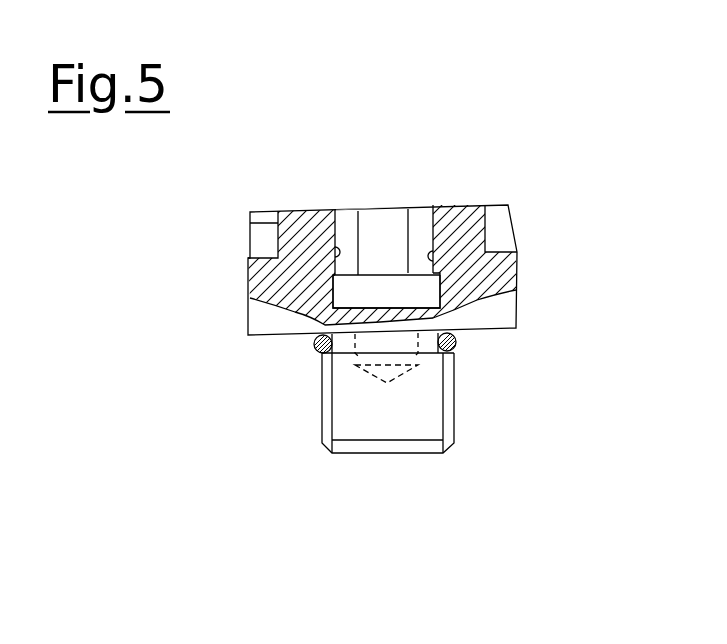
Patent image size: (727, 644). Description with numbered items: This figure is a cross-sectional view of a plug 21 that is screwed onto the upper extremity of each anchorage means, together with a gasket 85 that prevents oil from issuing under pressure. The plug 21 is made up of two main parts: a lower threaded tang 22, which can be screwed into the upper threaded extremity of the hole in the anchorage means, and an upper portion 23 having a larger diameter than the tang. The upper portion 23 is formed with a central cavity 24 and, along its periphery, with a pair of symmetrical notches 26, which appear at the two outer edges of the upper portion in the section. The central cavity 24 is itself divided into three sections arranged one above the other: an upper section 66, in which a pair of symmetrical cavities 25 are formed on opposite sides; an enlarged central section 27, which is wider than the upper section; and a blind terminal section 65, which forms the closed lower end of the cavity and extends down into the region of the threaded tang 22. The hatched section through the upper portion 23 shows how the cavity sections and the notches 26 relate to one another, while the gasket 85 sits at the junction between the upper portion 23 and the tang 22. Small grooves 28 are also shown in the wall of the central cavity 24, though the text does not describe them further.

The plug 21 is at (508, 147).
The lower threaded tang 22 is at (417, 412).
The upper portion 23 is at (503, 277).
The central cavity 24 is at (373, 205).
The symmetrical cavities 25 is at (342, 210).
The symmetrical notches 26 is at (265, 237).
The enlarged central section 27 is at (347, 290).
The groove 28 is at (262, 265).
The blind terminal section 65 is at (457, 370).
The upper section 66 is at (395, 213).
The gasket 85 is at (317, 353).